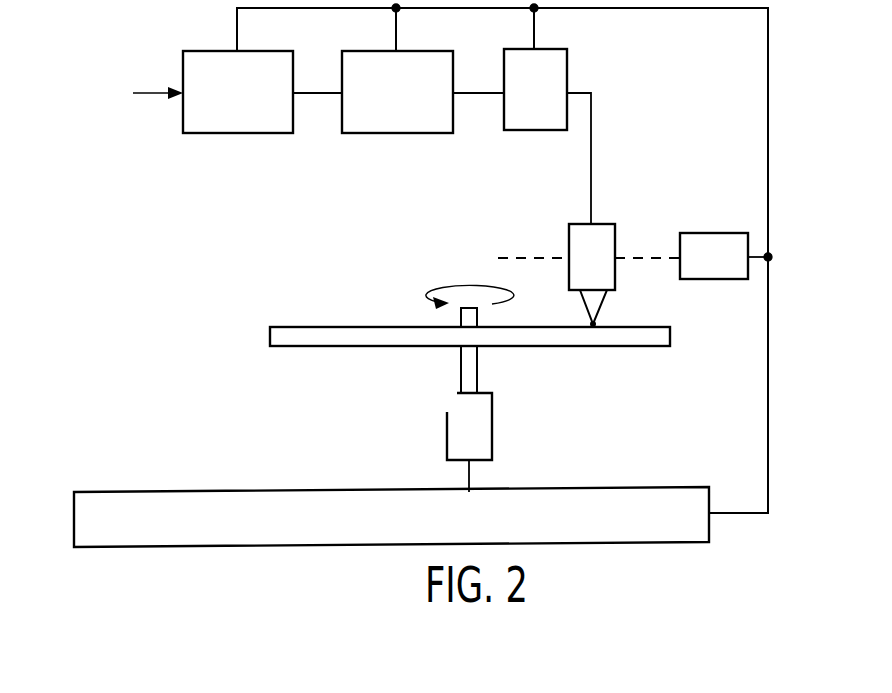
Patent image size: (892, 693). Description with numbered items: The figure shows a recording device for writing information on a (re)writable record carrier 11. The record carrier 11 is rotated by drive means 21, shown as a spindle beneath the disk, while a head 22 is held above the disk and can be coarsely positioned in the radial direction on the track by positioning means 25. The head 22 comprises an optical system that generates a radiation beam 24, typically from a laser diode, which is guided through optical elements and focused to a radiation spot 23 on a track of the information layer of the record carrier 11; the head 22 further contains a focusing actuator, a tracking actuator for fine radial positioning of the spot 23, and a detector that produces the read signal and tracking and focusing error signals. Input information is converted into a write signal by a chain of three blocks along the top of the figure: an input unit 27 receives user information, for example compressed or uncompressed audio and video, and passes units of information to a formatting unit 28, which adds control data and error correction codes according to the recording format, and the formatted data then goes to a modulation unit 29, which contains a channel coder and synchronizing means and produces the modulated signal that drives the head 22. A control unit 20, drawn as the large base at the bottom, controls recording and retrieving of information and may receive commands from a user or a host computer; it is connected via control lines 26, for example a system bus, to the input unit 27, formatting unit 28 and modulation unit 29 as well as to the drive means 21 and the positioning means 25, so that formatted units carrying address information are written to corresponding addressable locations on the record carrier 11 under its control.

The record carrier 11 is at (645, 339).
The control unit 20 is at (676, 490).
The drive means 21 is at (493, 415).
The head 22 is at (569, 243).
The radiation spot 23 is at (600, 321).
The radiation beam 24 is at (582, 305).
The positioning means 25 is at (716, 244).
The control lines 26 is at (768, 96).
The input unit 27 is at (237, 122).
The formatting unit 28 is at (388, 122).
The modulation unit 29 is at (534, 122).